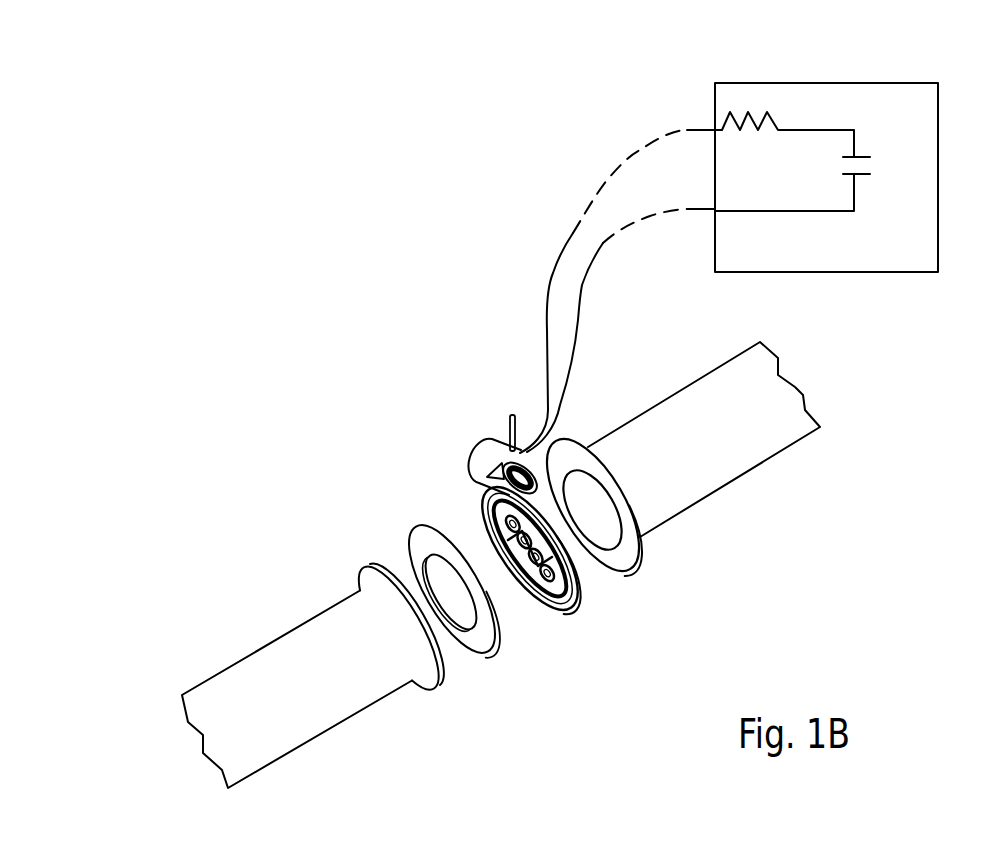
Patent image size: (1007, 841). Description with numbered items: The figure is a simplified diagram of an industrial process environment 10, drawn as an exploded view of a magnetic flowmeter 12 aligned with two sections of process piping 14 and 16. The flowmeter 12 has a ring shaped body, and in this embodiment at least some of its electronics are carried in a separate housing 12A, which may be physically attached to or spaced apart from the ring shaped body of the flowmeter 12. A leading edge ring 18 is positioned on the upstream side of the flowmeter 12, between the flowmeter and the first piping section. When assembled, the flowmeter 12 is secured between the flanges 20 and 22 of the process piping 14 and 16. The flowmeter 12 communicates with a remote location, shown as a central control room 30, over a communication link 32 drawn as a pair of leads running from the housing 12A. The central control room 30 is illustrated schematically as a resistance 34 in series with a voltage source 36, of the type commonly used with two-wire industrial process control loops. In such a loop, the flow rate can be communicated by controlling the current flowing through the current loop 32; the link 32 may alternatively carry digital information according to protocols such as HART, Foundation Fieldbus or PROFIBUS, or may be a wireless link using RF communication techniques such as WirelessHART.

The industrial process environment 10 is at (221, 294).
The magnetic flowmeter 12 is at (569, 619).
The separate housing 12A is at (473, 467).
The process piping 14 is at (272, 730).
The process piping 16 is at (740, 433).
The leading edge ring 18 is at (425, 547).
The flange 20 is at (412, 689).
The flange 22 is at (640, 547).
The central control room 30 is at (847, 83).
The communication link 32 is at (545, 340).
The resistance 34 is at (748, 128).
The voltage source 36 is at (873, 167).